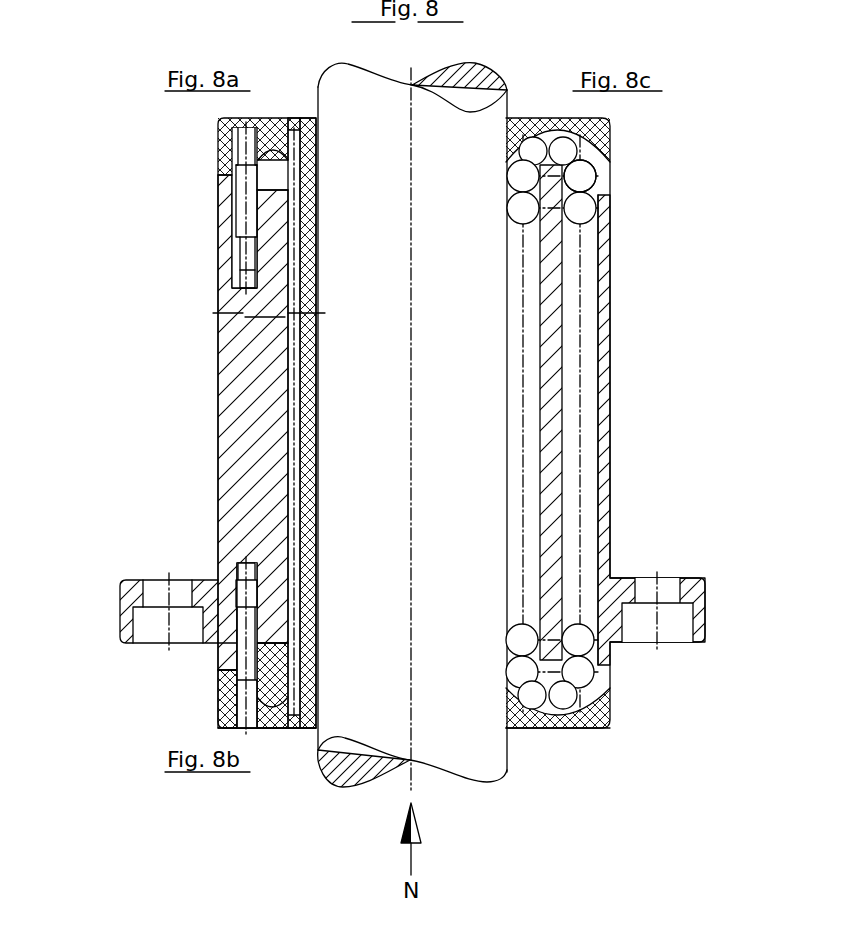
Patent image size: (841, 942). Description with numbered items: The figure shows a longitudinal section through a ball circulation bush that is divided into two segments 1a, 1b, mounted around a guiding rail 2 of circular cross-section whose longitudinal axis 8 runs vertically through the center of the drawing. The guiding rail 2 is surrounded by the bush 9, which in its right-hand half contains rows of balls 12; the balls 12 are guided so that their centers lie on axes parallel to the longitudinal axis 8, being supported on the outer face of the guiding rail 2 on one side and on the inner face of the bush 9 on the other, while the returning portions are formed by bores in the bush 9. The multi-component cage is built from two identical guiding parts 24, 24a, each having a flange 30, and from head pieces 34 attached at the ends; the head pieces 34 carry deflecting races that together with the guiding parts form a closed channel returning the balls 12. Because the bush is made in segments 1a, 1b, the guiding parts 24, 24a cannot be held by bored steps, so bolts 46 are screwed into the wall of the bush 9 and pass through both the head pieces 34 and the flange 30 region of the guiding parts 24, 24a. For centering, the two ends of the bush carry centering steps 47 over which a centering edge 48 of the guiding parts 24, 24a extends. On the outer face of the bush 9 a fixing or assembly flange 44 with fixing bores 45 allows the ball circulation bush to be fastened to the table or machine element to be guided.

In FIG. 8, the segment 1a is at (236, 379).
In FIG. 8C, the segment 1b is at (604, 379).
In FIG. 8, the guiding rail 2 is at (478, 762).
In FIG. 8, the longitudinal axis 8 is at (411, 470).
In FIG. 8C, the bush 9 is at (602, 518).
In FIG. 8C, the balls 12 is at (600, 220).
In FIG. 8, the guiding part 24 is at (307, 331).
In FIG. 8, the guiding part 24a is at (307, 471).
In FIG. 8B, the flange 30 is at (228, 658).
In FIG. 8B, the head piece 34 is at (273, 727).
In FIG. 8C, the head piece 34 is at (593, 727).
In FIG. 8B, the fixing or assembly flange 44 is at (130, 615).
In FIG. 8B, the fixing bores 45 is at (163, 593).
In FIG. 8B, the bolts 46 is at (242, 708).
In FIG. 8A, the centering steps 47 is at (228, 198).
In FIG. 8A, the centering edge 48 is at (231, 187).
In FIG. 8C, the centering edge 48 is at (604, 192).